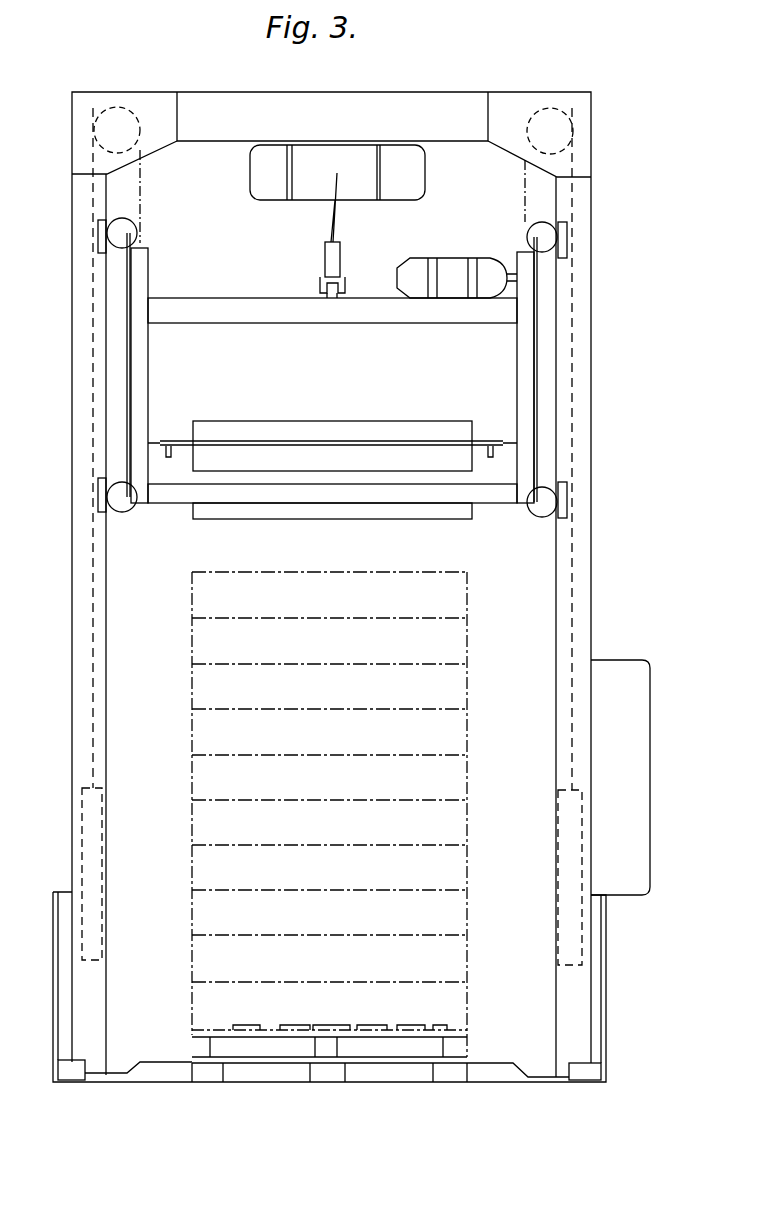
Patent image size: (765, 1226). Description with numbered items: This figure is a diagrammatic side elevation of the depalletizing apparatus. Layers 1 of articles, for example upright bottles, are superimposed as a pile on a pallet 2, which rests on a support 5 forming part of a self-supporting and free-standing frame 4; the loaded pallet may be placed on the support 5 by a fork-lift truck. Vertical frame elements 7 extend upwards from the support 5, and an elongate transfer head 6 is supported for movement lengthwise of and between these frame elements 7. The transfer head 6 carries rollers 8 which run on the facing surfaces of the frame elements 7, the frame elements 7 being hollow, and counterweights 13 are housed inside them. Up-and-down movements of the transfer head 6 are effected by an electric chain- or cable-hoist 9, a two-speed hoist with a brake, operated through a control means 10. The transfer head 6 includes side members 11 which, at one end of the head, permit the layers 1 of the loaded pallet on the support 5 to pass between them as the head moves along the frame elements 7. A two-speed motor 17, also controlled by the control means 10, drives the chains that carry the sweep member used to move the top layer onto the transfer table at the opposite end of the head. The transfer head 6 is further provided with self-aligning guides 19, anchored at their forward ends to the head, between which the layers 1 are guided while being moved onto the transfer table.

The layers of articles 1 is at (457, 602).
The pallet 2 is at (457, 1050).
The frame 4 is at (580, 1032).
The support 5 is at (500, 1068).
The transfer head 6 is at (190, 296).
The vertical frame elements 7 is at (73, 526).
The rollers 8 is at (103, 233).
The electric chain- or cable-hoist 9 is at (365, 185).
The control means 10 is at (593, 660).
The side members 11 is at (143, 403).
The counterweights 13 is at (112, 820).
The motor 17 is at (450, 270).
The self-aligning guides 19 is at (170, 447).